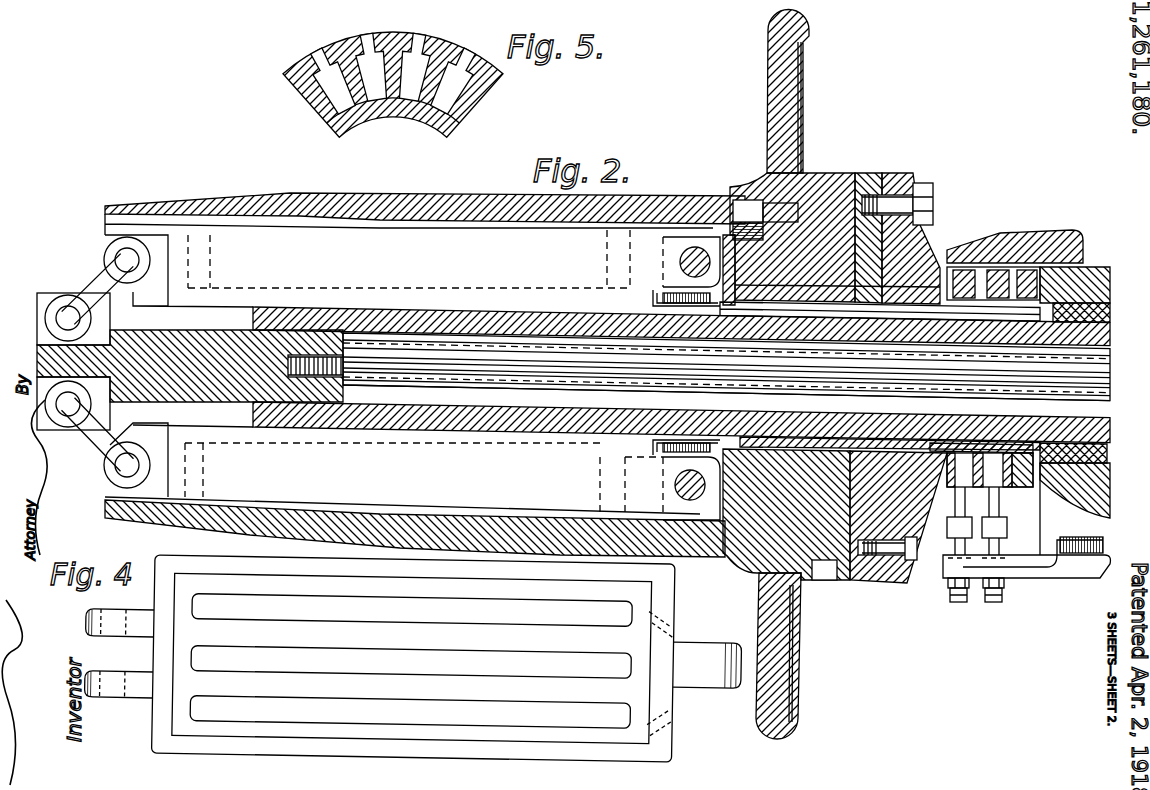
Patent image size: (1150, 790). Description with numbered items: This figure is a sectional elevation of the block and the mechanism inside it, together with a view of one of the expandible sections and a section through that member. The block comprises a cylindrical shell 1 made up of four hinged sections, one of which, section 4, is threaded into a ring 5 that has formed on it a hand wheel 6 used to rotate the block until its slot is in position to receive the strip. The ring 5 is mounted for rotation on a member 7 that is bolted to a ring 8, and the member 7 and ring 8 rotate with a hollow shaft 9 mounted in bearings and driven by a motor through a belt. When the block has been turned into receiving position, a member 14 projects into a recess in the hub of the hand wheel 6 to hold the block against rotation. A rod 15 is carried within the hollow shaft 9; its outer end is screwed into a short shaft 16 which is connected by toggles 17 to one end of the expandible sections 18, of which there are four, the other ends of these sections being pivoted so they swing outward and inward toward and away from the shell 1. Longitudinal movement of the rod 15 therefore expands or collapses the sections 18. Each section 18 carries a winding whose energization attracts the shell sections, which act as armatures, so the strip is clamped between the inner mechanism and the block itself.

In FIG. 2, the cylindrical shell 1 is at (295, 194).
In FIG. 2, the shell section 4 is at (702, 546).
In FIG. 2, the ring 5 is at (802, 573).
In FIG. 2, the hand wheel 6 is at (806, 112).
In FIG. 2, the member 7 is at (865, 175).
In FIG. 2, the ring 8 is at (905, 174).
In FIG. 2, the hollow shaft 9 is at (477, 413).
In FIG. 2, the member 14 is at (682, 258).
In FIG. 2, the rod 15 is at (657, 380).
In FIG. 2, the short shaft 16 is at (631, 326).
In FIG. 2, the toggles 17 is at (100, 282).
In FIG. 5, the expandible sections 18 is at (392, 112).
In FIG. 2, the expandible sections 18 is at (107, 231).
In FIG. 4, the expandible sections 18 is at (663, 716).